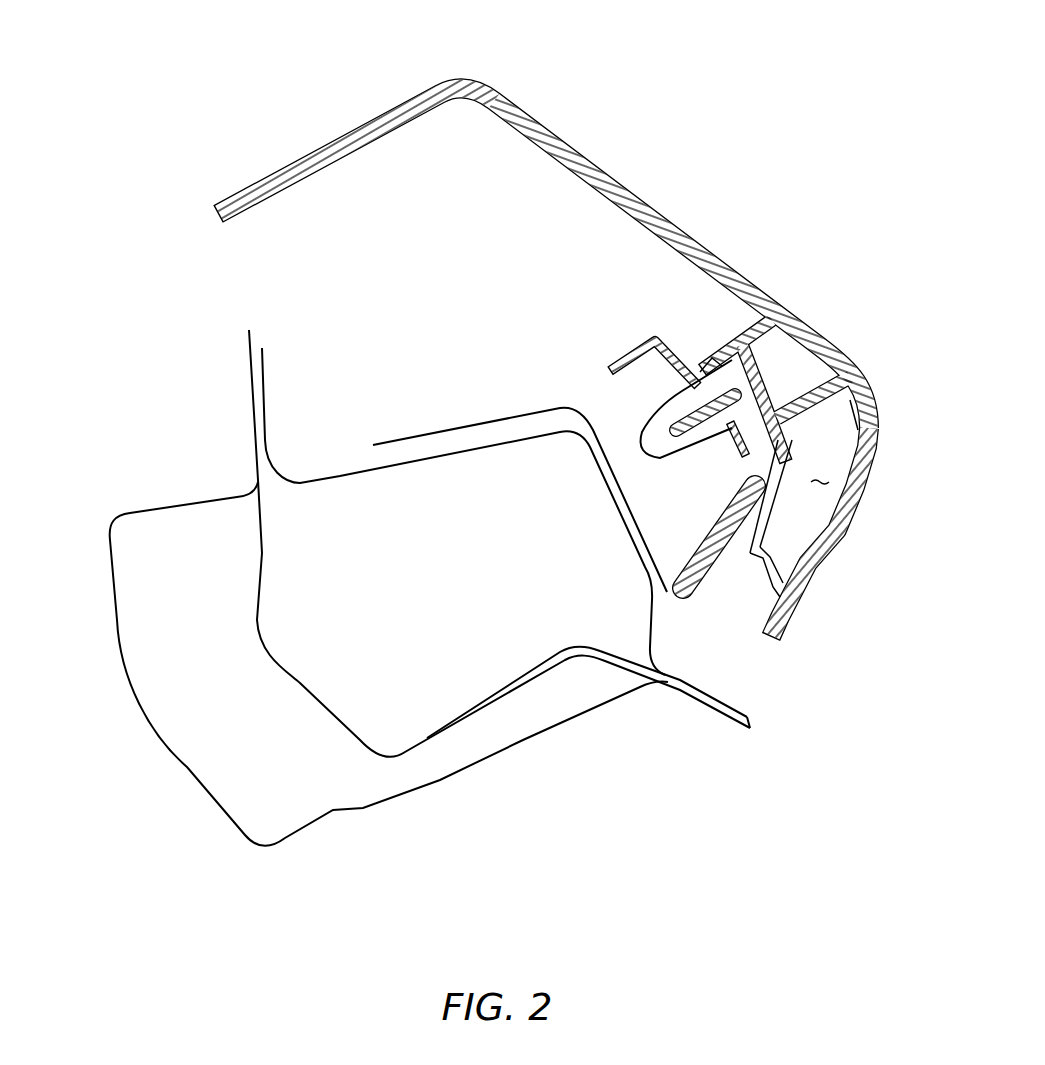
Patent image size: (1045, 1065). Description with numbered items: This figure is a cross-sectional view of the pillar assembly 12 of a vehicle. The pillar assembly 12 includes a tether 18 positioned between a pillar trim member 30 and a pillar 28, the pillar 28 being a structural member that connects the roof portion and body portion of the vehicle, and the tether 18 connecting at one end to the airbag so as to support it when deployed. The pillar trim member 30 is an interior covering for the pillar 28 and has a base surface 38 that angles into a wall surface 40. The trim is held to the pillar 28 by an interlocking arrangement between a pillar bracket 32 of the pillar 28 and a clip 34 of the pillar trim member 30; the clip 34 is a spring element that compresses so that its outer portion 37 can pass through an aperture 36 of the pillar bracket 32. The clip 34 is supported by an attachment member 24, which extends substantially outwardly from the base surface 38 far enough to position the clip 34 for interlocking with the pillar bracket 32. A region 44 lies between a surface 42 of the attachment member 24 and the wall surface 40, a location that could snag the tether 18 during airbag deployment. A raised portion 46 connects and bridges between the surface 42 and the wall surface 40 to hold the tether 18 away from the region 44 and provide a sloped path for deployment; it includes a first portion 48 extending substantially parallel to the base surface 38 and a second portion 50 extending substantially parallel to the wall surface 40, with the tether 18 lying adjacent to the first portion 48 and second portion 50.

The pillar assembly 12 is at (144, 100).
The tether 18 is at (700, 595).
The attachment member 24 is at (690, 334).
The pillar 28 is at (113, 592).
The pillar trim member 30 is at (859, 296).
The pillar bracket 32 is at (640, 350).
The clip 34 is at (639, 419).
The aperture 36 is at (720, 428).
The outer portion 37 is at (650, 332).
The base surface 38 is at (753, 283).
The wall surface 40 is at (850, 487).
The surface 42 is at (815, 393).
The region 44 is at (819, 466).
The raised portion 46 is at (795, 512).
The first portion 48 is at (800, 433).
The second portion 50 is at (763, 530).